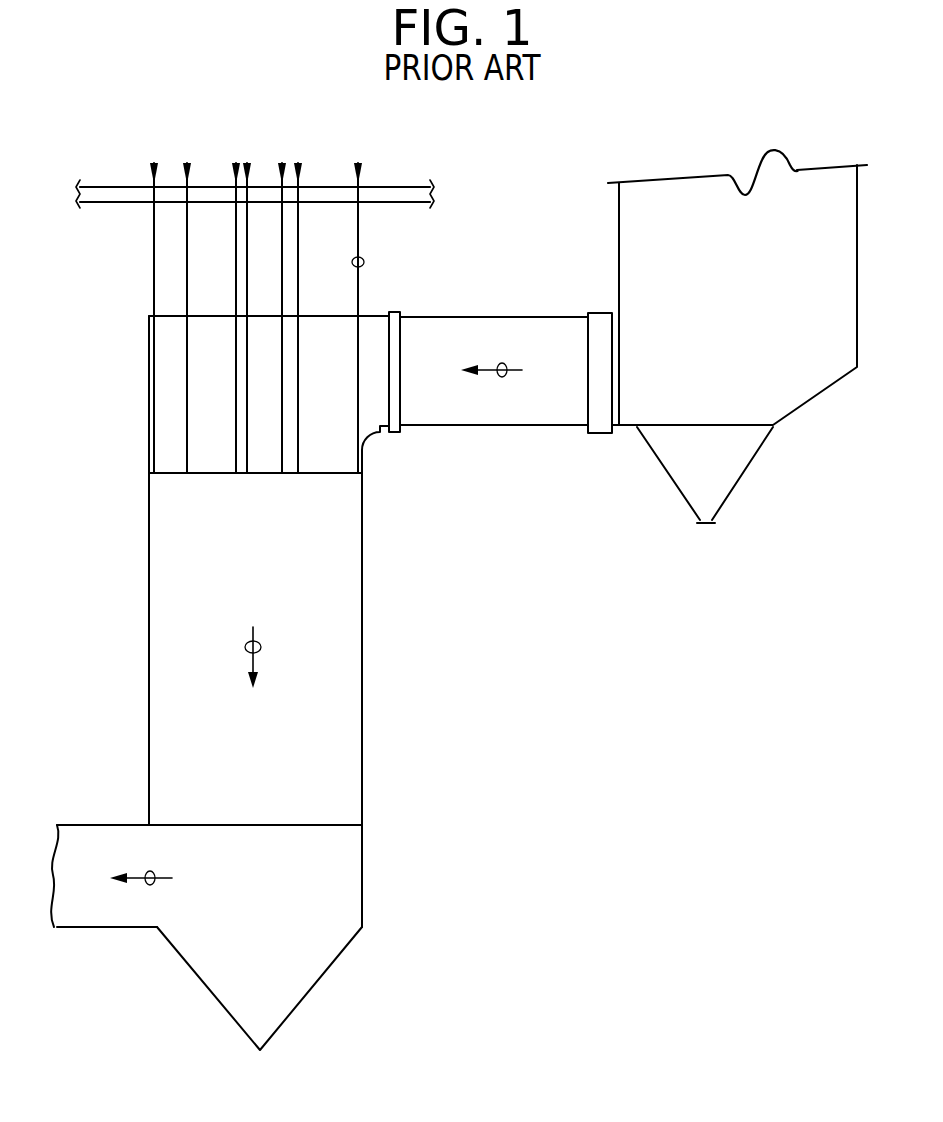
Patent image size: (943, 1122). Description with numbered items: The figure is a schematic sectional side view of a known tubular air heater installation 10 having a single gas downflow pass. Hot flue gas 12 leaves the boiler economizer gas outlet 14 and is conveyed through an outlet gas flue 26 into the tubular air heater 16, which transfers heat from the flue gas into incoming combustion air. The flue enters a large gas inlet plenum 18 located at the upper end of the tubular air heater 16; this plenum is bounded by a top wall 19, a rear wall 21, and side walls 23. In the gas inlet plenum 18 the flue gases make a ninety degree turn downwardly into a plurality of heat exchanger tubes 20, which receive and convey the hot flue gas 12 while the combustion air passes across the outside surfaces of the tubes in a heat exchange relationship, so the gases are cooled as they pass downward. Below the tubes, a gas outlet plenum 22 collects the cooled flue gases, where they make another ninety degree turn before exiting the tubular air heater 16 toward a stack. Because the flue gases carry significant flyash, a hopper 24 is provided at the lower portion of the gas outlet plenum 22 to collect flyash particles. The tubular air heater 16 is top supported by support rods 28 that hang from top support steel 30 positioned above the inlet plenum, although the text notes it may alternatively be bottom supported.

The tubular air heater installation 10 is at (533, 600).
The hot flue gas 12 is at (506, 364).
The boiler economizer gas outlet 14 is at (721, 316).
The tubular air heater 16 is at (118, 552).
The gas inlet plenum 18 is at (167, 355).
The top wall 19 is at (202, 316).
The heat exchanger tubes 20 is at (167, 638).
The rear wall 21 is at (148, 408).
The gas outlet plenum 22 is at (353, 883).
The side walls 23 is at (311, 403).
The hopper 24 is at (325, 960).
The outlet gas flue 26 is at (460, 335).
The support rods 28 is at (364, 262).
The top support steel 30 is at (390, 192).